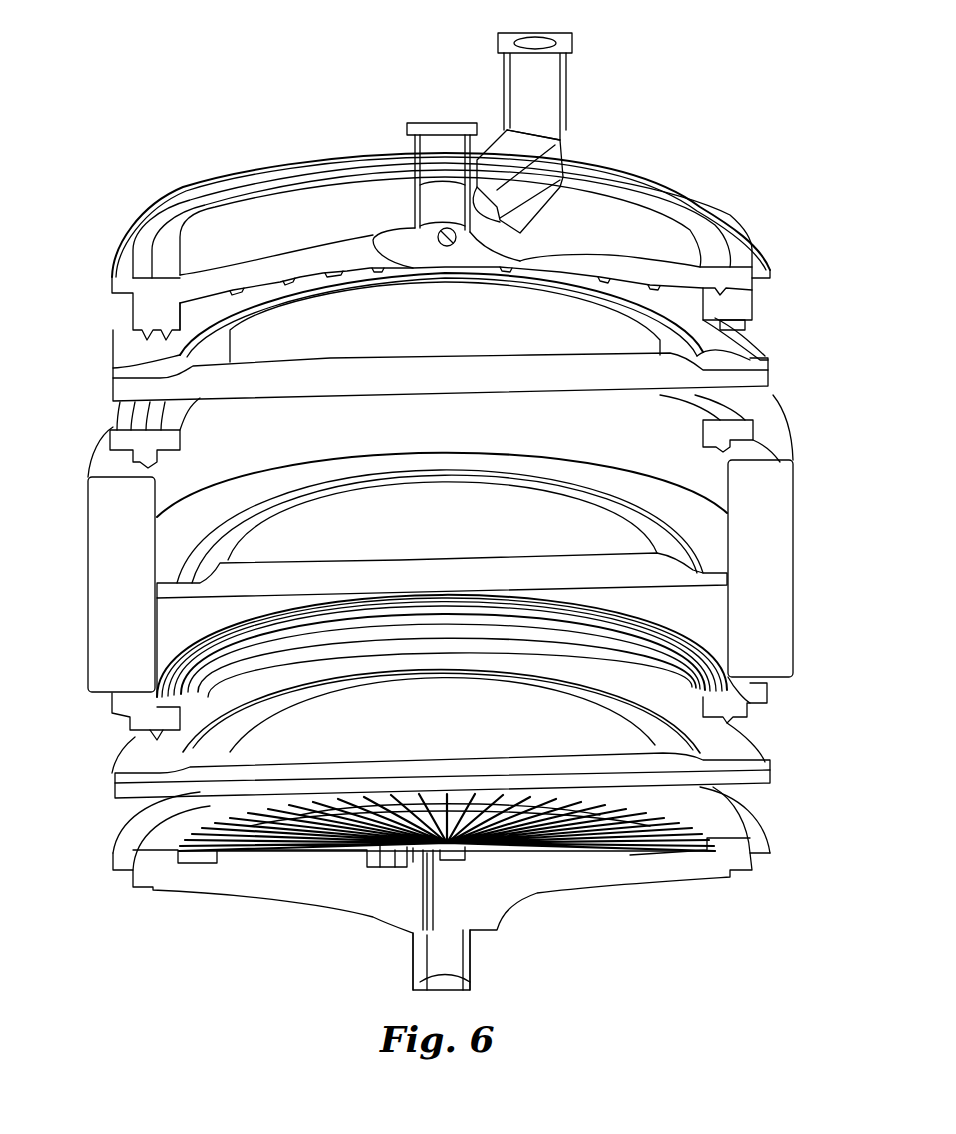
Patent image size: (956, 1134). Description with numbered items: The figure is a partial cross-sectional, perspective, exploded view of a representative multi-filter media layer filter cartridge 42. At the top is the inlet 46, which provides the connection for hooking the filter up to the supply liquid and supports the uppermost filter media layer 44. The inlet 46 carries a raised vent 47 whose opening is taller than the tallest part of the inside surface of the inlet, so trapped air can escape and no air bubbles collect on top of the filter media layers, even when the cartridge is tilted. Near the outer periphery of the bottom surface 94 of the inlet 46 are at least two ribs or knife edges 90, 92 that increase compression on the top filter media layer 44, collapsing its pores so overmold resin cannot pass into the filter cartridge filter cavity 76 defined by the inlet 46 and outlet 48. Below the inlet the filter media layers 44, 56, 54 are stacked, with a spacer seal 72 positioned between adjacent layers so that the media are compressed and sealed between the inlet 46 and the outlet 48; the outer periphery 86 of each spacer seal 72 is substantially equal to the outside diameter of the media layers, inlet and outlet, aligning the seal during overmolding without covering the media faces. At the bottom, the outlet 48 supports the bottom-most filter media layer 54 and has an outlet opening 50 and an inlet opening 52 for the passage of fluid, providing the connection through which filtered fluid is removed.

The multi-filter media layer filter cartridge 42 is at (637, 122).
The filter media layer 44 is at (220, 378).
The inlet 46 is at (277, 210).
The raised vent 47 is at (522, 87).
The outlet 48 is at (515, 877).
The outlet opening 50 is at (447, 962).
The inlet opening 52 is at (440, 133).
The bottom most filter media layer 54 is at (217, 778).
The filter media layer 56 is at (217, 587).
The spacer seal 72 is at (747, 427).
The filter cartridge filter cavity 76 is at (607, 536).
The outer periphery 86 is at (123, 447).
The rib/knife edge 90 is at (740, 323).
The rib/knife edge 92 is at (763, 360).
The bottom surface 94 is at (747, 320).